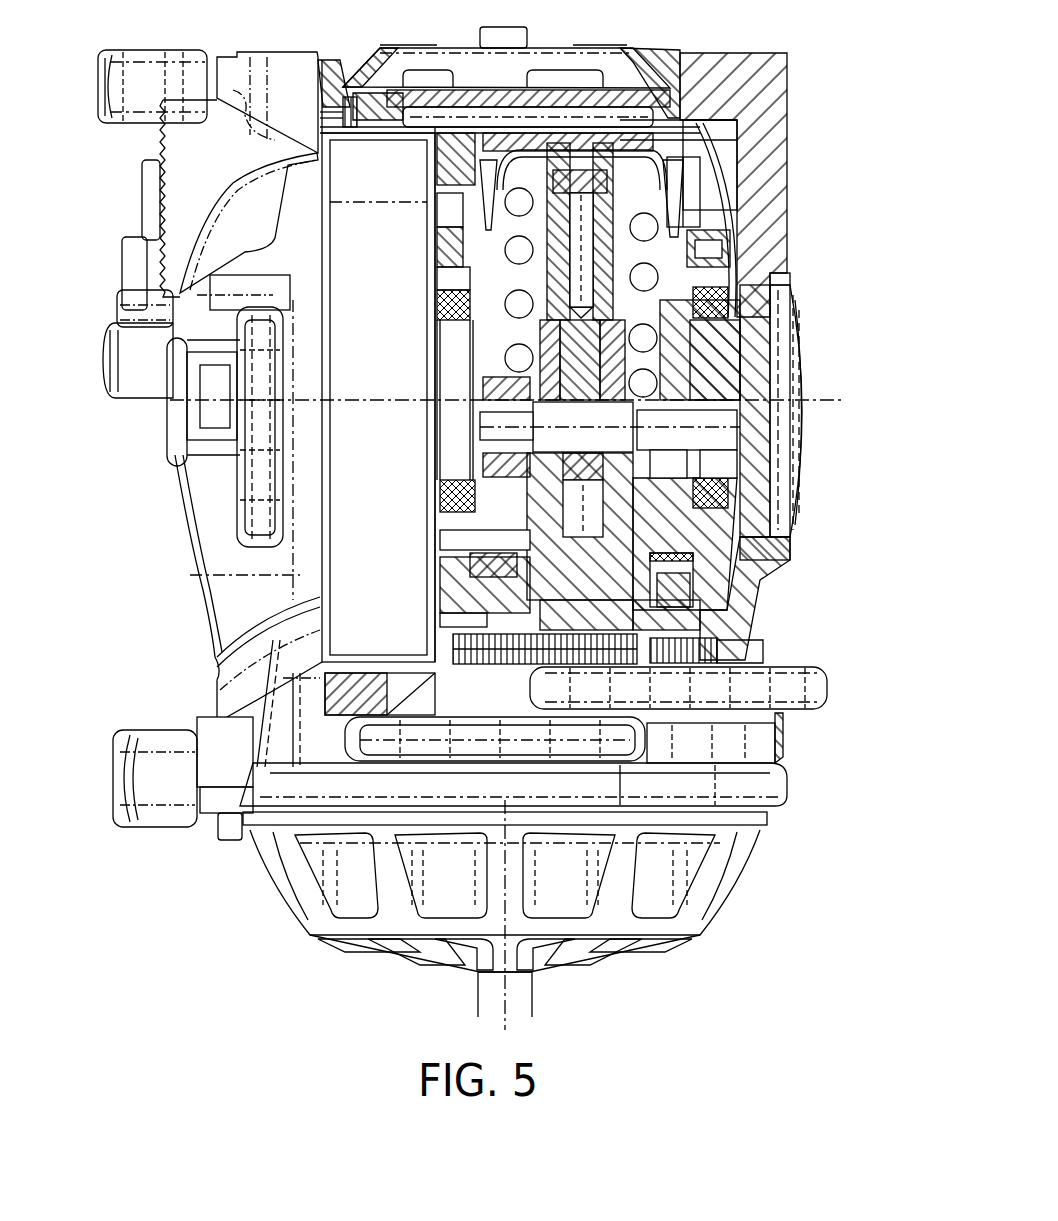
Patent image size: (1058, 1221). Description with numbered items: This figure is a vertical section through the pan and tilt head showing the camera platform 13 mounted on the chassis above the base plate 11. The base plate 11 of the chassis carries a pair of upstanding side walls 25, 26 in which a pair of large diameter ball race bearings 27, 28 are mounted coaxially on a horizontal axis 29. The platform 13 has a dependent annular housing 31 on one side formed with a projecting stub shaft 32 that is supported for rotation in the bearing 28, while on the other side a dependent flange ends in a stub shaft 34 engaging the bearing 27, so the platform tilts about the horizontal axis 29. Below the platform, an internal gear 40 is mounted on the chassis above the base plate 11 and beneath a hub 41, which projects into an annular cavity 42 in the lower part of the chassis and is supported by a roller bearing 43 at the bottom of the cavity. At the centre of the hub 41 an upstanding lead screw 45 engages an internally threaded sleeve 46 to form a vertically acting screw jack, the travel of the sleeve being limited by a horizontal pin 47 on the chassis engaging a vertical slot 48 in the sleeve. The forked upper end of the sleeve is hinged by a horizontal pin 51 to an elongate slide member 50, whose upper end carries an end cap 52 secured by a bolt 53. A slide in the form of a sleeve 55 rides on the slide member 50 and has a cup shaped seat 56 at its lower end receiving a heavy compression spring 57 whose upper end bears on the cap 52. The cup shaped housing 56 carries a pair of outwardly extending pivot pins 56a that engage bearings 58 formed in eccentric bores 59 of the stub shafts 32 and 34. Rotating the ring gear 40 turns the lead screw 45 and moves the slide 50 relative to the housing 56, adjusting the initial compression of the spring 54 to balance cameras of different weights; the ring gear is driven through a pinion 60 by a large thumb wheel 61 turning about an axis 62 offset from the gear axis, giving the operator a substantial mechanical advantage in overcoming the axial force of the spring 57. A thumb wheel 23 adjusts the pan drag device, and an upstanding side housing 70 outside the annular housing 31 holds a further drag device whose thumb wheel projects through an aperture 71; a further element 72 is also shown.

The base plate 11 is at (770, 778).
The platform 13 is at (668, 58).
The thumb wheel 23 is at (412, 728).
The upstanding side wall 25 is at (722, 577).
The upstanding side wall 26 is at (443, 587).
The ball race bearing 27 is at (778, 268).
The ball race bearing 28 is at (452, 276).
The horizontal axis 29 is at (845, 397).
The annular housing 31 is at (352, 222).
The stub shaft 32 is at (453, 362).
The stub shaft 34 is at (752, 343).
The internal gear 40 is at (640, 634).
The hub 41 is at (700, 602).
The annular cavity 42 is at (700, 557).
The roller bearing 43 is at (510, 563).
The lead screw 45 is at (470, 600).
The sleeve 46 is at (553, 522).
The pin 47 is at (460, 545).
The vertical slot 48 is at (443, 497).
The slide member 50 is at (477, 338).
The horizontal pin 51 is at (480, 447).
The end cap 52 is at (725, 184).
The bolt 53 is at (578, 195).
The spring 54 is at (507, 246).
The sleeve 55 is at (460, 385).
The cup shaped seat 56 is at (680, 375).
The pivot pins 56a is at (480, 423).
The compression spring 57 is at (515, 303).
The bearings 58 is at (715, 456).
The eccentric bores 59 is at (715, 464).
The pinion 60 is at (700, 650).
The thumb wheel 61 is at (818, 690).
The axis 62 is at (690, 742).
The side housing 70 is at (202, 562).
The aperture 71 is at (245, 470).
The actuator ring 72 is at (262, 503).